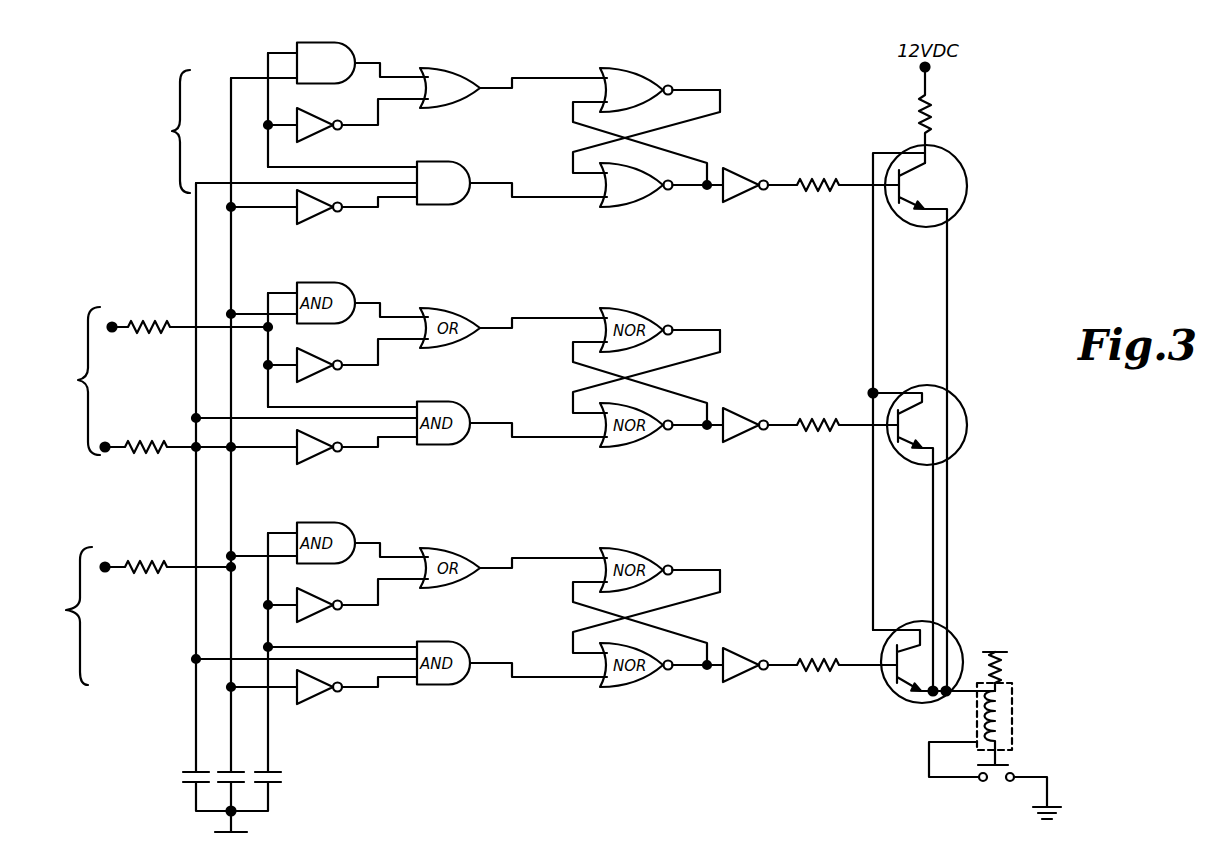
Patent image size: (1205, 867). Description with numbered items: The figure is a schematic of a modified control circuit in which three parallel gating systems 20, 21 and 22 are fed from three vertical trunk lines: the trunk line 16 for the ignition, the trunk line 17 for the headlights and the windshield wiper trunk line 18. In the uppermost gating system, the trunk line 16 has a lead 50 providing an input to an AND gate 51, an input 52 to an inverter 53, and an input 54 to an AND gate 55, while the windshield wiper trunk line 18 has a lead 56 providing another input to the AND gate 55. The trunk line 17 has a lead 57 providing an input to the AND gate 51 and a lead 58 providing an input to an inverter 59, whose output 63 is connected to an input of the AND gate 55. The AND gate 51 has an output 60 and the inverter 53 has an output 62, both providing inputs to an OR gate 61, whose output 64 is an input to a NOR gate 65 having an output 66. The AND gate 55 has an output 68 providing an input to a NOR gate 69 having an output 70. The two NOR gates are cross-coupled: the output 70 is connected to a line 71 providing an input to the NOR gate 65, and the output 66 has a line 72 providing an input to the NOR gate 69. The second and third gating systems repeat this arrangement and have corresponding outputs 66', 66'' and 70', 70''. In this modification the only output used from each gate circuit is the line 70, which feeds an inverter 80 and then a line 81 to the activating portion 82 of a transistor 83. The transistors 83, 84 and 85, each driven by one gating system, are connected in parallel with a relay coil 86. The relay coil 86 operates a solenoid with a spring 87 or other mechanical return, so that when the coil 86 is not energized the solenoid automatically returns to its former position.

The trunk line 16 is at (273, 153).
The trunk line 17 is at (231, 270).
The windshield wiper trunk line 18 is at (196, 243).
The gating system 20 is at (161, 131).
The gating system 21 is at (62, 381).
The gating system 22 is at (56, 616).
The lead 50 is at (283, 51).
The AND gate 51 is at (356, 28).
The input 52 is at (294, 108).
The inverter 53 is at (339, 111).
The input 54 is at (380, 150).
The AND gate 55 is at (460, 206).
The lead 56 is at (216, 182).
The lead 57 is at (250, 76).
The lead 58 is at (240, 212).
The inverter 59 is at (311, 217).
The output 60 is at (380, 63).
The OR gate 61 is at (458, 68).
The output 62 is at (384, 119).
The output 63 is at (377, 209).
The output 64 is at (572, 54).
The NOR gate 65 is at (632, 67).
The output 66 is at (701, 71).
The output 66' is at (697, 308).
The output 66'' is at (701, 546).
The output 68 is at (531, 199).
The NOR gate 69 is at (616, 208).
The output 70 is at (698, 205).
The output 70' is at (698, 448).
The output 70'' is at (693, 697).
The line 71 is at (666, 146).
The line 72 is at (722, 100).
The inverter 80 is at (746, 170).
The line 81 is at (776, 190).
The activating portion 82 is at (923, 427).
The transistor 83 is at (973, 183).
The transistor 84 is at (973, 438).
The transistor 85 is at (960, 628).
The relay coil 86 is at (1013, 712).
The spring 87 is at (1003, 662).